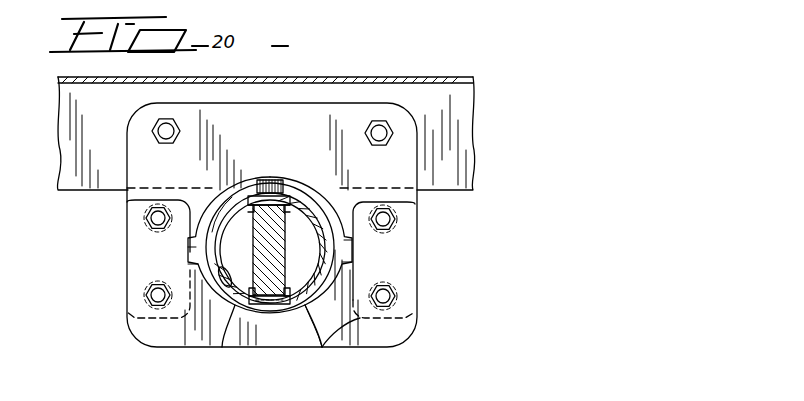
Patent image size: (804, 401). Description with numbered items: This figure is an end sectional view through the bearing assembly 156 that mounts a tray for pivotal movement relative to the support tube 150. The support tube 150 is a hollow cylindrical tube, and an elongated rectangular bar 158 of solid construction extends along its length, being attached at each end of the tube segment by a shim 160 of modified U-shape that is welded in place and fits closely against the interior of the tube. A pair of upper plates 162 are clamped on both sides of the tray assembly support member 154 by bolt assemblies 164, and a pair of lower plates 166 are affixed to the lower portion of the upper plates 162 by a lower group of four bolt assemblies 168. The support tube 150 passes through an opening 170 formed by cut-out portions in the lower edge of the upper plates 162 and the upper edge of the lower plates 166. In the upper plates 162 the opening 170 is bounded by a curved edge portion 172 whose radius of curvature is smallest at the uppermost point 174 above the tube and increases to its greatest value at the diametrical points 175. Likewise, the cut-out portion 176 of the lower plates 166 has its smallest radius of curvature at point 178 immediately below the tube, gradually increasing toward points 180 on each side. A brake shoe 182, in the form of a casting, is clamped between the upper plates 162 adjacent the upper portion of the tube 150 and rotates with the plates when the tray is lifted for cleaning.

The support tube 150 is at (228, 277).
The intermediate support member 154 is at (468, 175).
The bearing assembly 156 is at (417, 238).
The elongated rectangular bar 158 is at (264, 305).
The shim 160 is at (283, 203).
The upper plate 162 is at (333, 125).
The bolt assembly 164 is at (168, 118).
The lower plate 166 is at (398, 323).
The bolt assembly 168 is at (148, 218).
The opening 170 is at (360, 320).
The curved edge portion 172 is at (232, 197).
The uppermost point 174 is at (268, 190).
The diametrical point 175 is at (347, 238).
The cut-out portion 176 is at (320, 312).
The point 178 is at (278, 312).
The point 180 is at (200, 267).
The brake shoe 182 is at (305, 197).